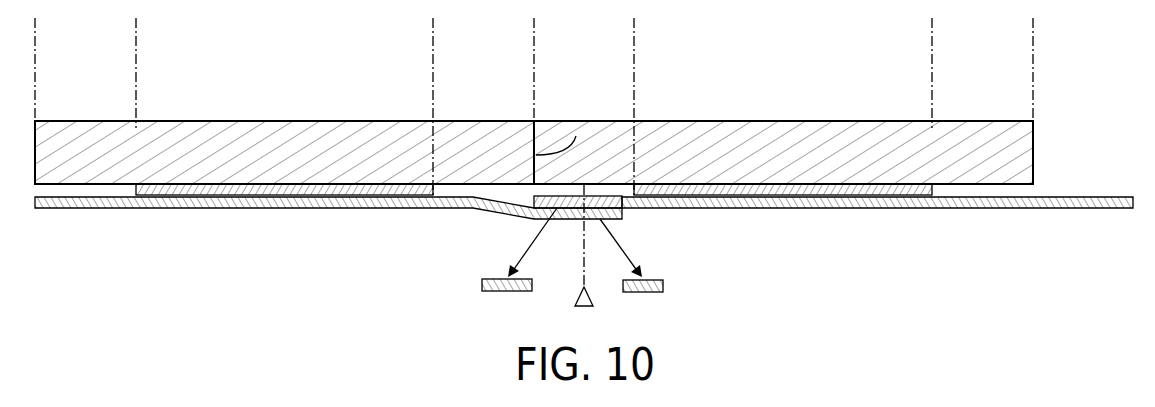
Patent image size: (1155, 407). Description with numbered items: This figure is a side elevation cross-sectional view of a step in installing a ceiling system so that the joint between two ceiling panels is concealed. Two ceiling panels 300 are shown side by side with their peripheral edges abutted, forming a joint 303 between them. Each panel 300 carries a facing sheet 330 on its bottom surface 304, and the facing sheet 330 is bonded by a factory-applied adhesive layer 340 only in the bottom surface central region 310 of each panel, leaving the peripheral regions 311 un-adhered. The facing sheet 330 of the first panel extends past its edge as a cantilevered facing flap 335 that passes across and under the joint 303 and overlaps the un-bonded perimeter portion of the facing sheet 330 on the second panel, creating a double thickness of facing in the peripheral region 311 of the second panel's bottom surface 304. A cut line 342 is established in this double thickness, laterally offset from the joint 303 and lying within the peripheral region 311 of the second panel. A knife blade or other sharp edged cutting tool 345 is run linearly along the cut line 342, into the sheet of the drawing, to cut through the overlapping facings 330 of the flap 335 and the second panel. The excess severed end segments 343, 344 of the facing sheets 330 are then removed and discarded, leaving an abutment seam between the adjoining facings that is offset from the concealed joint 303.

The ceiling panel 300 is at (272, 108).
The joint 303 is at (576, 136).
The bottom surface 304 is at (626, 187).
The bottom surface central region 310 is at (148, 31).
The peripheral region 311 is at (47, 31).
The facing sheet 330 is at (183, 209).
The facing flap 335 is at (566, 219).
The adhesive layer 340 is at (292, 190).
The cut line 342 is at (585, 263).
The end segment 343 is at (657, 280).
The end segment 344 is at (481, 285).
The cutting tool 345 is at (577, 298).